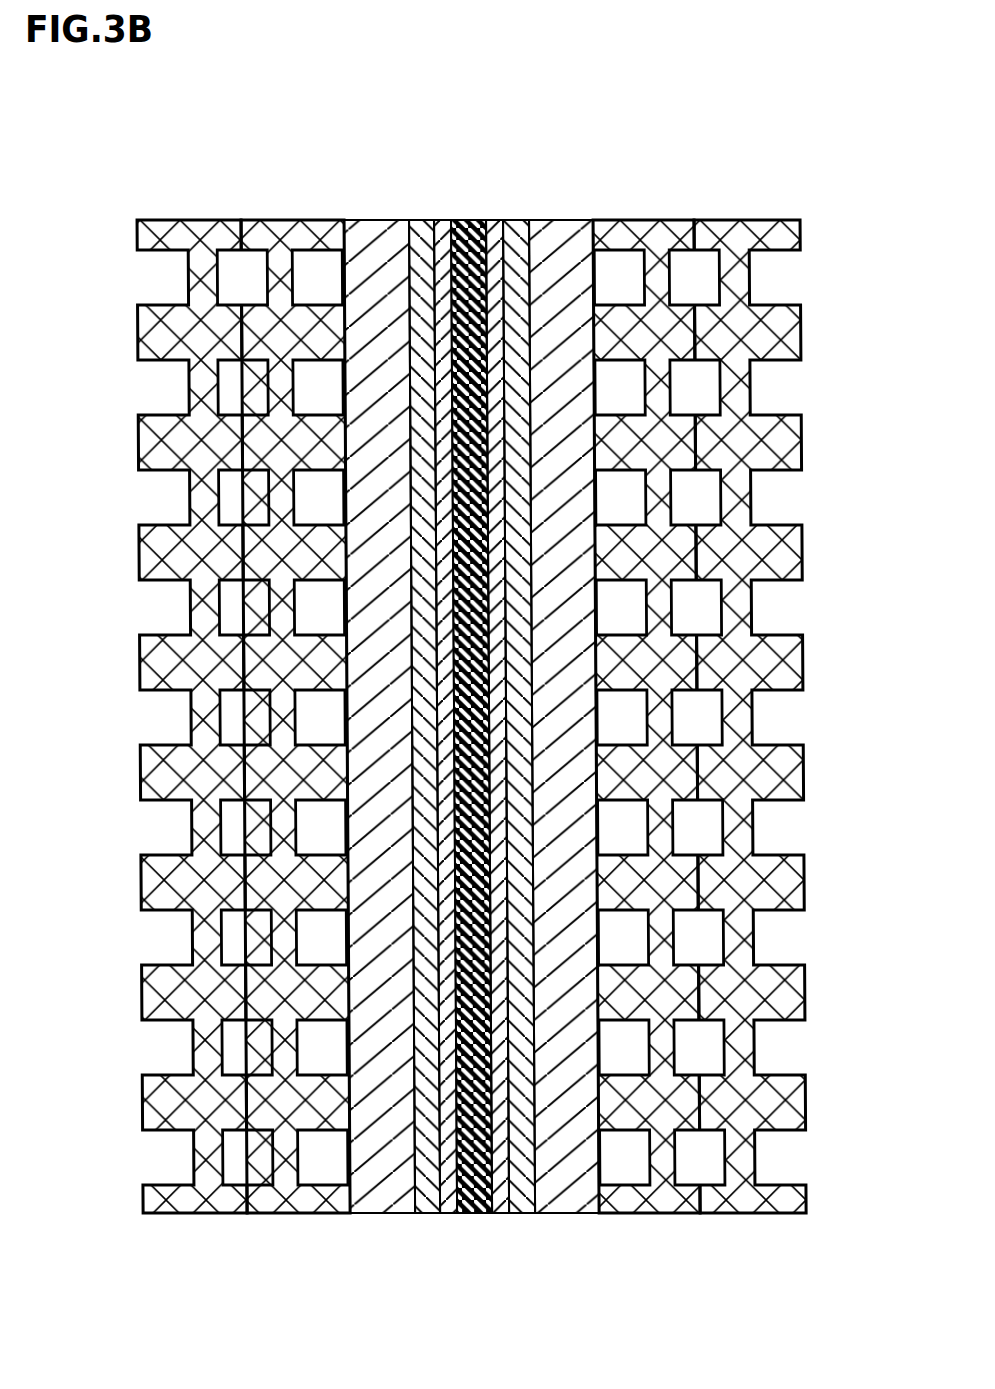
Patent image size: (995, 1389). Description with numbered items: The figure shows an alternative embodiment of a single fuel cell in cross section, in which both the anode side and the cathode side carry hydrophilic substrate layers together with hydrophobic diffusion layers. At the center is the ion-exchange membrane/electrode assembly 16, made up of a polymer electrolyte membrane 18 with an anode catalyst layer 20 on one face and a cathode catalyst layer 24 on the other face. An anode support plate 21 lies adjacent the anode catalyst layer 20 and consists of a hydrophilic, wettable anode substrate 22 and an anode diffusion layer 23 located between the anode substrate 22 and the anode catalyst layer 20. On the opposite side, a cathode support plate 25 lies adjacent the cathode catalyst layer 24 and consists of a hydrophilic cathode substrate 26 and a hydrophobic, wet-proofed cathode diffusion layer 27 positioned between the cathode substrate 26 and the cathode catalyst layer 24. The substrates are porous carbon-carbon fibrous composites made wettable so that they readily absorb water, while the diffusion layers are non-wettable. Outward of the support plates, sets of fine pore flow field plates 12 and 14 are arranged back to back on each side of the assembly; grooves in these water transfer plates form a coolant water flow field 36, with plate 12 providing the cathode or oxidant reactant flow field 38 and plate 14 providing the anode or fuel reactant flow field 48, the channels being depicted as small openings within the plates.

The flow field plate 12 is at (205, 210).
The flow field plate 14 is at (302, 210).
The ion-exchange membrane/electrode assembly 16 is at (455, 729).
The polymer electrolyte membrane 18 is at (482, 1195).
The anode catalyst layer 20 is at (448, 1195).
The anode support plate 21 is at (361, 723).
The anode substrate 22 is at (373, 1202).
The anode diffusion layer 23 is at (425, 1195).
The cathode catalyst layer 24 is at (500, 1195).
The cathode support plate 25 is at (589, 725).
The cathode substrate 26 is at (578, 1200).
The cathode diffusion layer 27 is at (527, 1195).
The coolant water flow field 36 is at (227, 290).
The cathode or oxidant reactant flow field 38 is at (603, 290).
The anode or fuel reactant flow field 48 is at (301, 290).